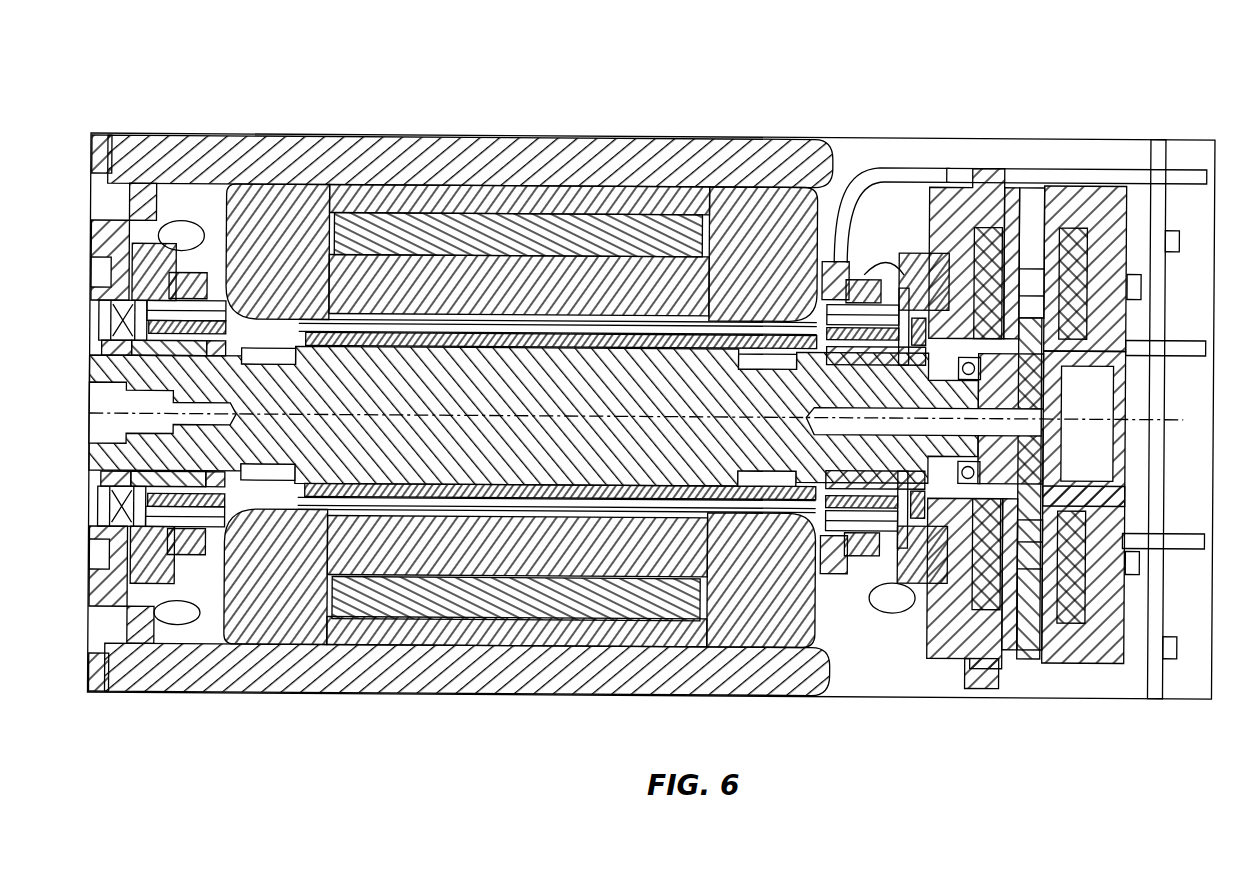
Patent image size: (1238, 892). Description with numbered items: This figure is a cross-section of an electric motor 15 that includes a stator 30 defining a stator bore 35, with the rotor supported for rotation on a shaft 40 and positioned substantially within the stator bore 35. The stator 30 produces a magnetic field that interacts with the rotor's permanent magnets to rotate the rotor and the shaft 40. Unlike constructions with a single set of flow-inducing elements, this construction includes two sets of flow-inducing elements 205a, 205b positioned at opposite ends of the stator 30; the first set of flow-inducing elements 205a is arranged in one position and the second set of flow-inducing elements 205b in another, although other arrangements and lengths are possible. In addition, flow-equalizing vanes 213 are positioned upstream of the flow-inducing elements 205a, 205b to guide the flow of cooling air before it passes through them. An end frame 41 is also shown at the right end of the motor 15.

The electric motor 15 is at (650, 416).
The stator 30 is at (600, 280).
The stator bore 35 is at (430, 575).
The shaft 40 is at (500, 455).
The end frame 41 is at (1113, 116).
The first set of flow-inducing elements 205a is at (773, 478).
The second set of flow-inducing elements 205b is at (272, 355).
The flow-equalizing vanes 213 is at (838, 258).